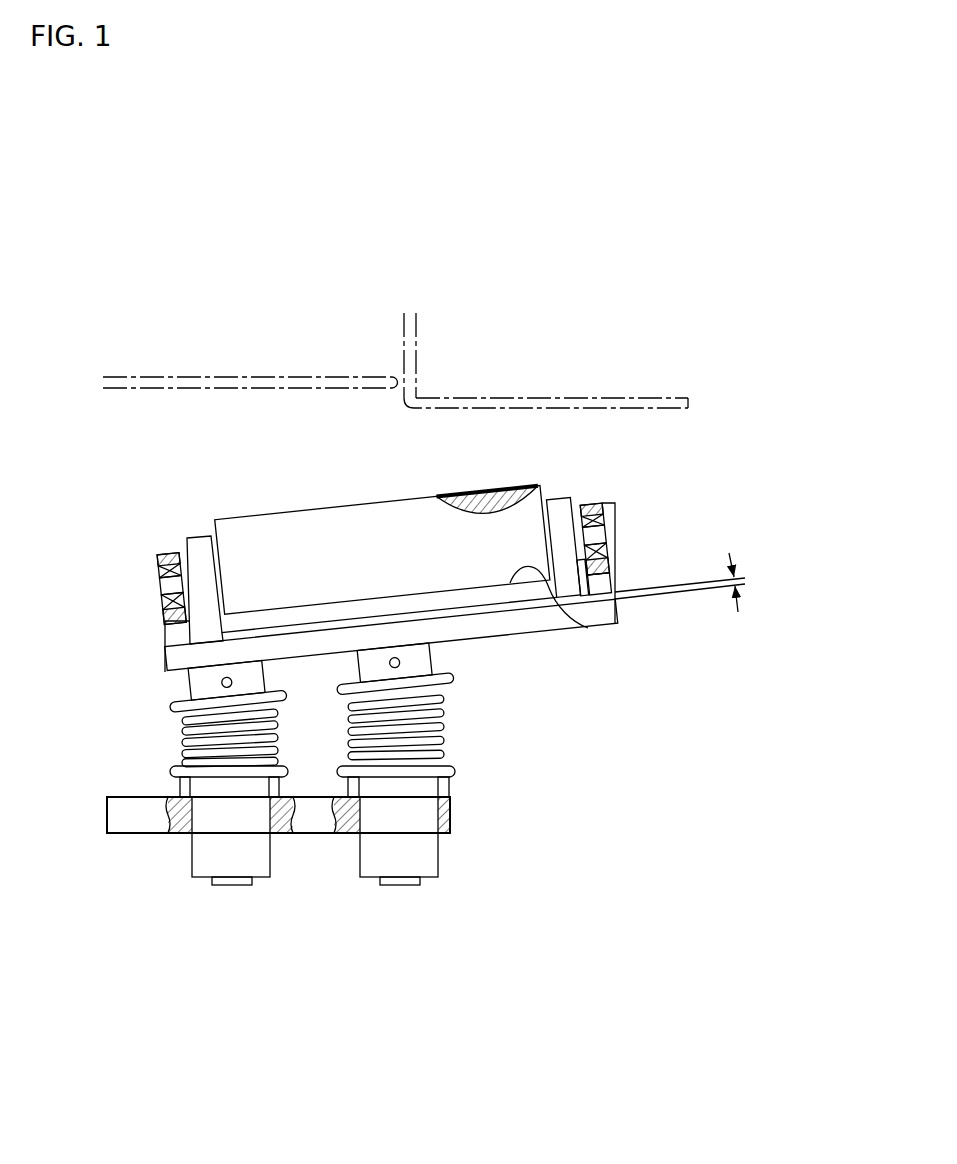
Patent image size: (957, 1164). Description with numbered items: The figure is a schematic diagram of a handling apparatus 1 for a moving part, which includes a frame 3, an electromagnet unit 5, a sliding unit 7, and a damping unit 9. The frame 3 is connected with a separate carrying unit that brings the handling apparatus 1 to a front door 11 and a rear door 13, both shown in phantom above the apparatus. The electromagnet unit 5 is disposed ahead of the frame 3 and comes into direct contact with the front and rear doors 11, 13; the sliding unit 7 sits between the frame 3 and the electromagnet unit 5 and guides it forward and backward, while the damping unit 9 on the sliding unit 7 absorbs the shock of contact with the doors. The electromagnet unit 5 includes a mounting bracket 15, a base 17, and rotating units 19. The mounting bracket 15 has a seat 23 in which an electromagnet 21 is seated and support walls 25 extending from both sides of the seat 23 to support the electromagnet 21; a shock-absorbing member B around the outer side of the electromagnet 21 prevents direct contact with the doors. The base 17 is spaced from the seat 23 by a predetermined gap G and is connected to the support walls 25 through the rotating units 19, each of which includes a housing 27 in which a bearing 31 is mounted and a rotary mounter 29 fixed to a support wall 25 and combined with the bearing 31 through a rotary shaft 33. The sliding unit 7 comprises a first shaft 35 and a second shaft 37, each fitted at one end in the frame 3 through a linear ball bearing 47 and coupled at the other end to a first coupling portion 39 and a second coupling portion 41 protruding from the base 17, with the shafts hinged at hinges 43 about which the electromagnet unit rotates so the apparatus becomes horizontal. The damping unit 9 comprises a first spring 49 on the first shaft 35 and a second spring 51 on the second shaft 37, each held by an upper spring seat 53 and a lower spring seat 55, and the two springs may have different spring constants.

The handling apparatus 1 is at (650, 727).
The frame 3 is at (115, 820).
The electromagnet unit 5 is at (592, 468).
The sliding unit 7 is at (212, 884).
The damping unit 9 is at (462, 712).
The front door 11 is at (205, 377).
The rear door 13 is at (570, 397).
The mounting bracket 15 is at (185, 524).
The base 17 is at (640, 600).
The rotating unit 19 is at (152, 608).
The electromagnet 21 is at (487, 493).
The seat 23 is at (590, 628).
The support wall 25 is at (200, 540).
The housing 27 is at (172, 633).
The rotary mounter 29 is at (157, 555).
The bearing 31 is at (157, 578).
The rotary shaft 33 is at (160, 598).
The first shaft 35 is at (180, 743).
The second shaft 37 is at (452, 757).
The first coupling portion 39 is at (182, 685).
The second coupling portion 41 is at (445, 655).
The hinge 43 is at (390, 663).
The linear ball bearing 47 is at (197, 855).
The first spring 49 is at (185, 729).
The second spring 51 is at (442, 740).
The upper spring seat 53 is at (178, 706).
The lower spring seat 55 is at (175, 772).
The shock-absorbing member B is at (452, 498).
The gap G is at (741, 580).